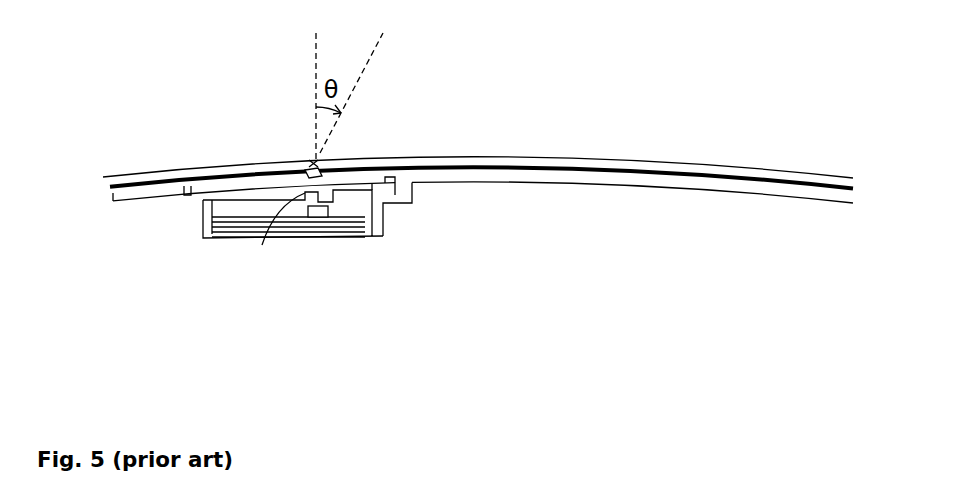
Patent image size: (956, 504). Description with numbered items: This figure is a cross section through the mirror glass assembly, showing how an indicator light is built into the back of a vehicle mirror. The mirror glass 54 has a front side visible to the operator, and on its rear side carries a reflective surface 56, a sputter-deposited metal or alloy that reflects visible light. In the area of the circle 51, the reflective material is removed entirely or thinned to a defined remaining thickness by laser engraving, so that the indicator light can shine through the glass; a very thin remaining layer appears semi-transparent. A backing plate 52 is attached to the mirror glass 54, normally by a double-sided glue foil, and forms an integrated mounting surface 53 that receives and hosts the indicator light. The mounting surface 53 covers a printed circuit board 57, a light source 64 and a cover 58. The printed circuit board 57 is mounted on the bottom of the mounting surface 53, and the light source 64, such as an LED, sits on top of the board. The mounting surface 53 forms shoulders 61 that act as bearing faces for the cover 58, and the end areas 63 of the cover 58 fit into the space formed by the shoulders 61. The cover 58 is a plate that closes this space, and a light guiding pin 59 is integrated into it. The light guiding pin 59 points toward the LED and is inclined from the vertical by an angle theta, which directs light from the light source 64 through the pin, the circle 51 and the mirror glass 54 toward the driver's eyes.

The circle 51 is at (313, 160).
The backing plate 52 is at (533, 185).
The mounting surface 53 is at (367, 240).
The mirror glass 54 is at (778, 175).
The reflective surface 56 is at (653, 170).
The printed circuit board 57 is at (222, 225).
The cover 58 is at (197, 197).
The light guiding pin 59 is at (262, 247).
The shoulder 61 is at (407, 190).
The end area 63 is at (388, 172).
The light source 64 is at (308, 222).